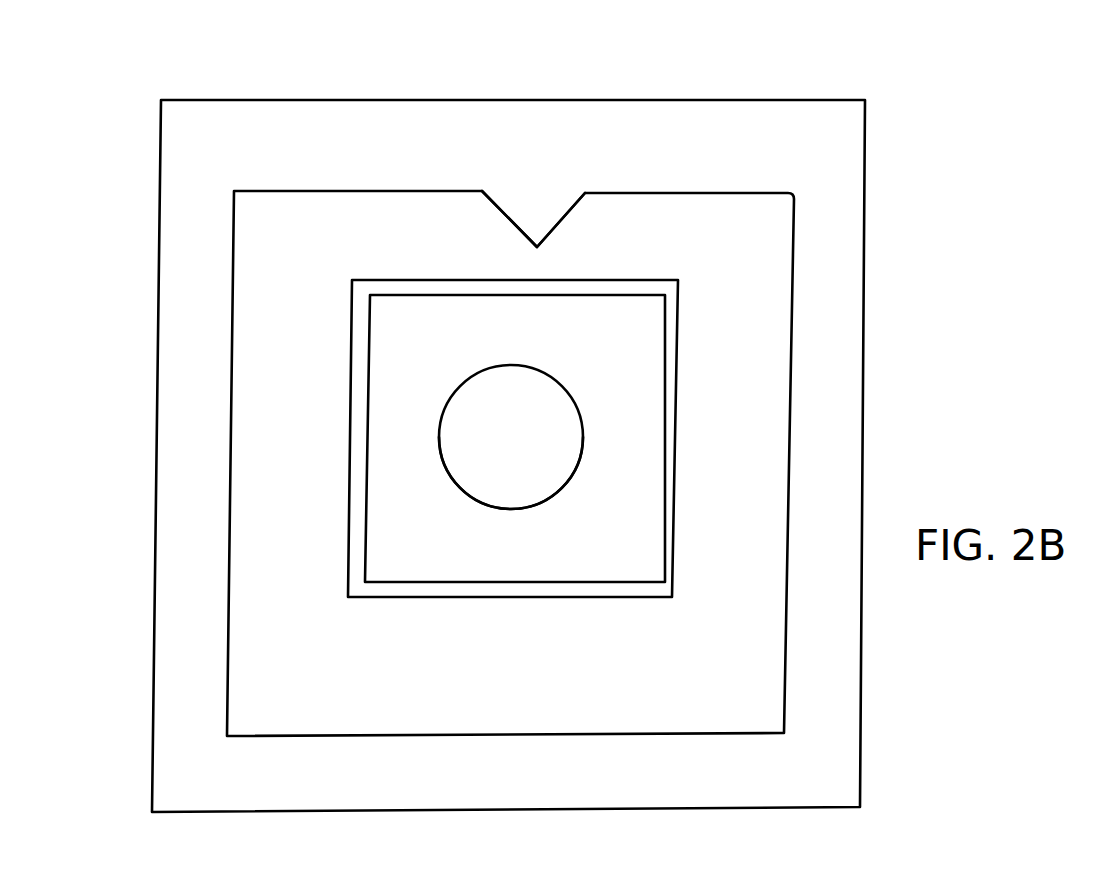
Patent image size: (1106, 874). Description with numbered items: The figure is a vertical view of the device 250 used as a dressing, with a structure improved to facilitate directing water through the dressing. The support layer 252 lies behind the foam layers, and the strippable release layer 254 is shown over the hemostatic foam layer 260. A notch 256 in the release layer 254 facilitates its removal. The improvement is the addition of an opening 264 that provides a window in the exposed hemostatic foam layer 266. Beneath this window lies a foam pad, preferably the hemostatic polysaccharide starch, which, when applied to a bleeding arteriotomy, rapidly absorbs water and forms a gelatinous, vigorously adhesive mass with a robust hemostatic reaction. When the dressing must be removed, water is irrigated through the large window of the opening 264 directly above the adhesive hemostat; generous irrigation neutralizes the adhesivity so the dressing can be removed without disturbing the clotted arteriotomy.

The device 250 is at (925, 226).
The support layer 252 is at (867, 287).
The strippable release layer 254 is at (795, 192).
The notch 256 is at (552, 198).
The hemostatic foam layer 260 is at (633, 381).
The opening 264 is at (535, 365).
The exposed hemostatic foam layer 266 is at (518, 433).